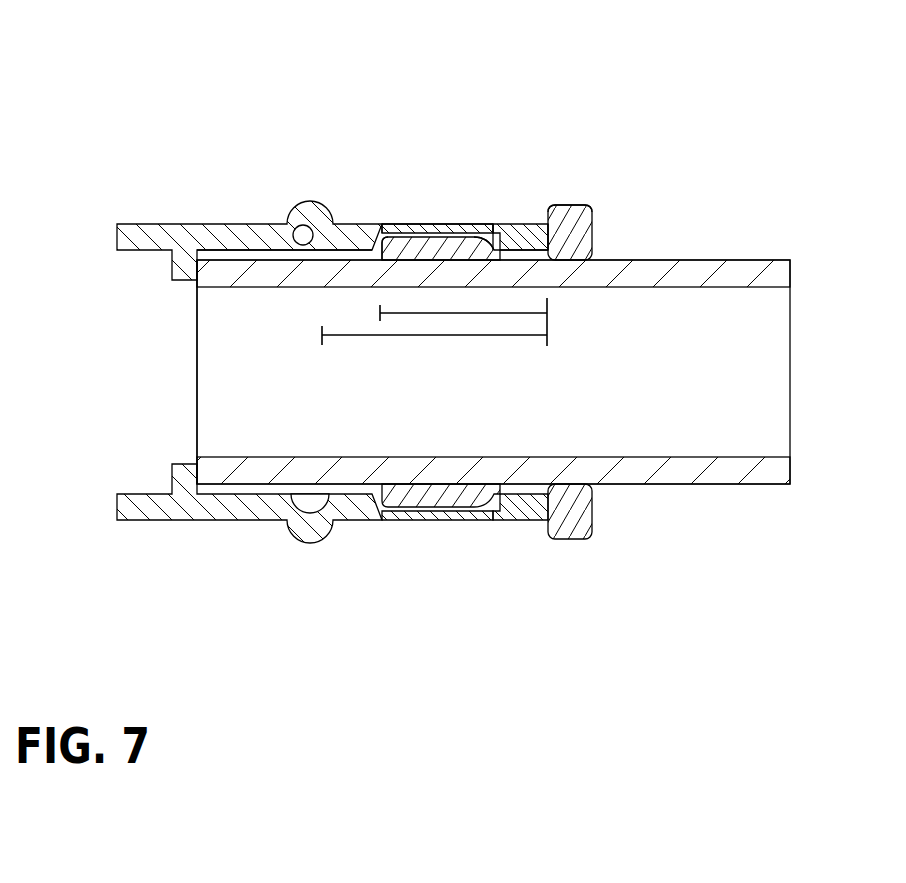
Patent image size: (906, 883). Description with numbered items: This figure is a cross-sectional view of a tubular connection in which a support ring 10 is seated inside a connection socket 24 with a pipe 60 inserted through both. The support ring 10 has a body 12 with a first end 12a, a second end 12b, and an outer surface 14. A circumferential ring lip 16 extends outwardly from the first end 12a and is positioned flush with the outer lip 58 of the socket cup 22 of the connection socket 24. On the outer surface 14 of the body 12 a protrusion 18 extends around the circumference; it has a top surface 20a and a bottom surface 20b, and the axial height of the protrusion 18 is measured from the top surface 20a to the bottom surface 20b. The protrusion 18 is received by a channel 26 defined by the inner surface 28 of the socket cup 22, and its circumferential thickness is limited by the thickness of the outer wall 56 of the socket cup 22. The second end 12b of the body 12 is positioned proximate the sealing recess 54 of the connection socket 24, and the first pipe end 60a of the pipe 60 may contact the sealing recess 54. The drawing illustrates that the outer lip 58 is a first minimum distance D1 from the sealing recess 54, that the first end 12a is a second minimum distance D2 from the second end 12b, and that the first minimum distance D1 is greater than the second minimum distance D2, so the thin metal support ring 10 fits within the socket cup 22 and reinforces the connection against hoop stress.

The support ring 10 is at (590, 198).
The body 12 is at (533, 260).
The first end 12a is at (535, 223).
The second end 12b is at (380, 231).
The outer surface 14 is at (518, 224).
The ring lip 16 is at (566, 208).
The protrusion 18 is at (402, 237).
The top surface 20a is at (483, 232).
The bottom surface 20b is at (384, 238).
The socket cup 22 is at (191, 221).
The connection socket 24 is at (124, 194).
The channel 26 is at (493, 214).
The inner surface 28 is at (228, 248).
The sealing recess 54 is at (292, 232).
The outer wall 56 is at (420, 222).
The outer lip 58 is at (550, 233).
The pipe 60 is at (746, 257).
The first pipe end 60a is at (197, 287).
The first minimum distance D1 is at (393, 336).
The second minimum distance D2 is at (417, 313).